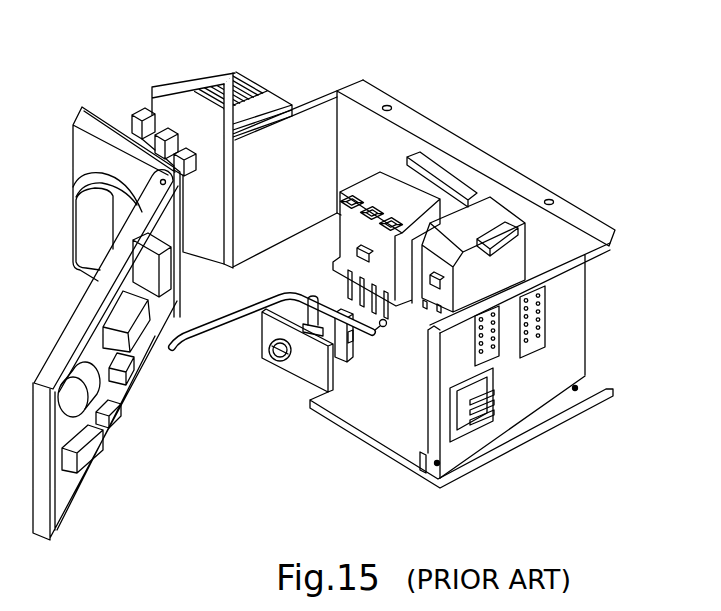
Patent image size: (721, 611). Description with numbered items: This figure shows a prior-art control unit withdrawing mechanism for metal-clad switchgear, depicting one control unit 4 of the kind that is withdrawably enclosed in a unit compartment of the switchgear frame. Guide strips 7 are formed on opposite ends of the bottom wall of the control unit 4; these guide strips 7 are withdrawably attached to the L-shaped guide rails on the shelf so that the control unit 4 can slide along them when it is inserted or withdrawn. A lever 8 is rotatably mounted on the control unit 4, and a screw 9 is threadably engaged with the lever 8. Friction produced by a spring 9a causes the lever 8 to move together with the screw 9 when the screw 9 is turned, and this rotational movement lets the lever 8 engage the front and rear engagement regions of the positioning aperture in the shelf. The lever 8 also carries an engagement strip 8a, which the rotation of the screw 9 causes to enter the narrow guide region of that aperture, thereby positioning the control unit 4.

The control unit 4 is at (332, 81).
The guide strip 7 is at (525, 428).
The lever 8 is at (343, 342).
The engagement strip 8a is at (262, 335).
The screw 9 is at (272, 363).
The spring 9a is at (318, 304).